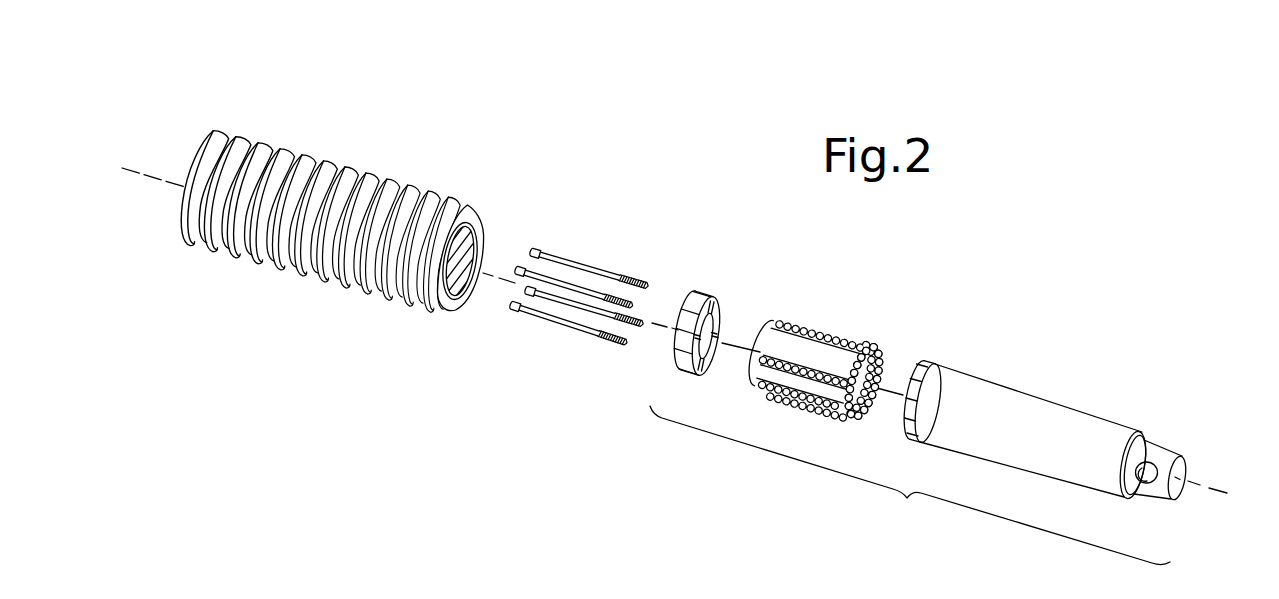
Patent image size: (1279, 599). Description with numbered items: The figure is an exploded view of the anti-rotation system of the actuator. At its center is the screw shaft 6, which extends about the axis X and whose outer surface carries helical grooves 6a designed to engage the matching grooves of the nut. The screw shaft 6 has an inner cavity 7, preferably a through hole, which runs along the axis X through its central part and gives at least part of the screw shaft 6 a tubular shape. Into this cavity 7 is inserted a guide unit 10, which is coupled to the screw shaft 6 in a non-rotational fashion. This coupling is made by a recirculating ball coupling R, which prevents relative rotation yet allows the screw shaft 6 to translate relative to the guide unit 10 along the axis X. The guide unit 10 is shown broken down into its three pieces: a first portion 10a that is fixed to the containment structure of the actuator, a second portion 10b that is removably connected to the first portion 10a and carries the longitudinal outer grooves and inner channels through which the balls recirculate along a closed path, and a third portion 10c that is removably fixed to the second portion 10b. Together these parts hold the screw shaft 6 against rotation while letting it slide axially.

The axis X is at (153, 177).
The screw shaft 6 is at (330, 285).
The helical grooves 6a is at (322, 282).
The inner cavity 7 is at (482, 245).
The guide unit 10 is at (923, 336).
The first portion 10a is at (1105, 418).
The second portion 10b is at (840, 325).
The third portion 10c is at (723, 287).
The recirculating ball coupling R is at (887, 348).